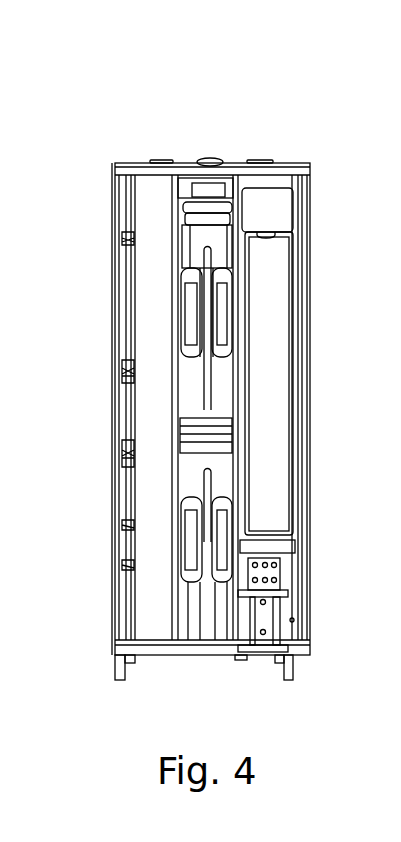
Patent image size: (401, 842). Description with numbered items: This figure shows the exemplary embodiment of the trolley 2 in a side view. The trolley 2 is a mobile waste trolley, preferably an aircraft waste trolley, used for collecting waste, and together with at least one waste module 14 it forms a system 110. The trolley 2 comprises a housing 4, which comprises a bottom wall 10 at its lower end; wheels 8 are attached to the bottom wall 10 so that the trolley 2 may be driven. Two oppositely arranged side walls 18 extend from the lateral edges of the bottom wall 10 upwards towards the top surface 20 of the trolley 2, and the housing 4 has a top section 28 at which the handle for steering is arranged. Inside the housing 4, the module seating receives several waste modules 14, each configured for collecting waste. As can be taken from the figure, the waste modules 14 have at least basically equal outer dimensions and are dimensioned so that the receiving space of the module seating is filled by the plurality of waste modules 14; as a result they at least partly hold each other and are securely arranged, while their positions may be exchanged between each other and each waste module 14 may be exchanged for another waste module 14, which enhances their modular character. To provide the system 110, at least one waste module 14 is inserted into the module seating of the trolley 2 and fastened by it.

The trolley 2 is at (335, 127).
The system 110 is at (302, 100).
The top surface 20 is at (207, 157).
The housing 4 is at (313, 210).
The top section 28 is at (107, 202).
The side walls 18 is at (107, 412).
The waste module 14 is at (145, 258).
The bottom wall 10 is at (202, 662).
The wheels 8 is at (117, 690).